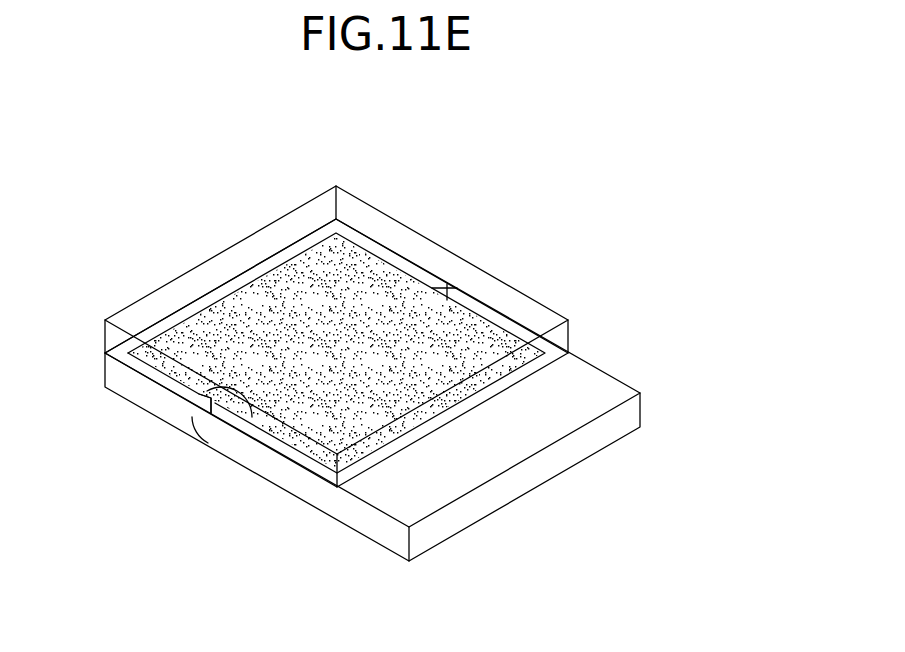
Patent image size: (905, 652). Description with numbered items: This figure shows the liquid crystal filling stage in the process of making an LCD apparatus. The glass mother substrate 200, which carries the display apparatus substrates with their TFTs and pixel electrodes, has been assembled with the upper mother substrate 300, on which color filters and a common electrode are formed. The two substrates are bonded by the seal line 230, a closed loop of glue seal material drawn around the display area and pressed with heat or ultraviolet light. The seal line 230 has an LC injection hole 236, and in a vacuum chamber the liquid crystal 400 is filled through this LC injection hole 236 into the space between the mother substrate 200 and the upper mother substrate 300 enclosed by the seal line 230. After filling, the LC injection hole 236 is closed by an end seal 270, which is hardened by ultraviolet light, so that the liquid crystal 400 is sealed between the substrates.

The mother substrate 200 is at (112, 377).
The upper mother substrate 300 is at (112, 335).
The seal line 230 is at (233, 292).
The liquid crystal 400 is at (297, 267).
The LC injection hole 236 is at (197, 418).
The end seal 270 is at (218, 424).